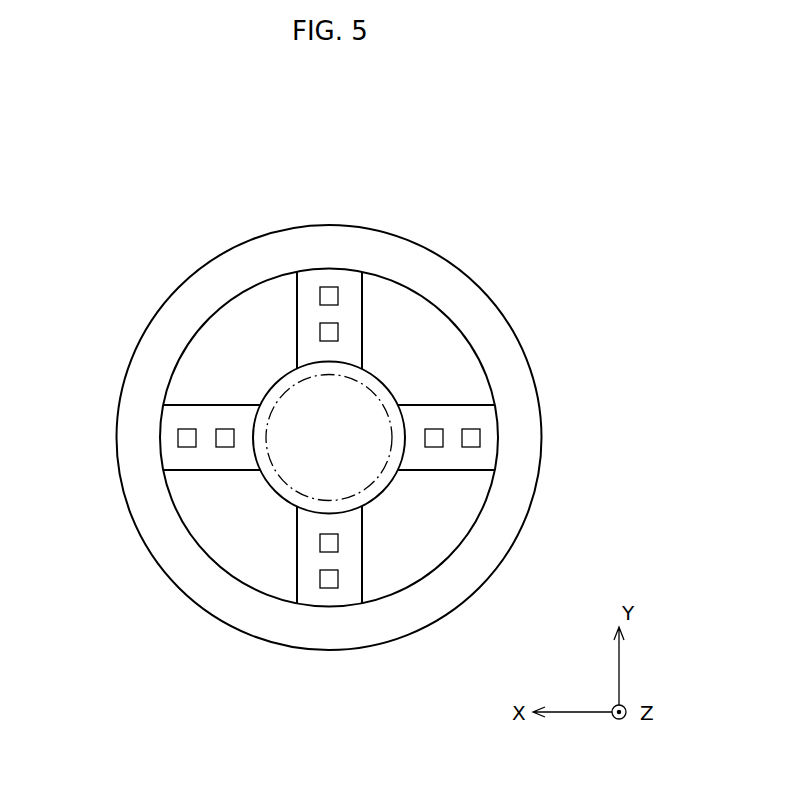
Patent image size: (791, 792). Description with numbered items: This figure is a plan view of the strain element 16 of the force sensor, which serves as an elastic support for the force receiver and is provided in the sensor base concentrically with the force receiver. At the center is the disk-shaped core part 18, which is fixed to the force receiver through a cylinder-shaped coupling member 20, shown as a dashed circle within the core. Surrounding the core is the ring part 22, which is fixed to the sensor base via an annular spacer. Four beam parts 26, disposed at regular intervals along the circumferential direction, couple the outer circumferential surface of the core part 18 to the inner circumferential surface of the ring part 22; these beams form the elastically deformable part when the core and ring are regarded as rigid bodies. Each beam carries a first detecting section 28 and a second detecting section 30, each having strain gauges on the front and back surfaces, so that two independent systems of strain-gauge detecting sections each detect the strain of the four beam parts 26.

The strain element 16 is at (387, 133).
The core part 18 is at (417, 293).
The coupling member 20 is at (282, 405).
The ring part 22 is at (163, 573).
The beam parts 26 is at (362, 298).
The first detecting sections 28 is at (319, 330).
The second detecting sections 30 is at (319, 294).